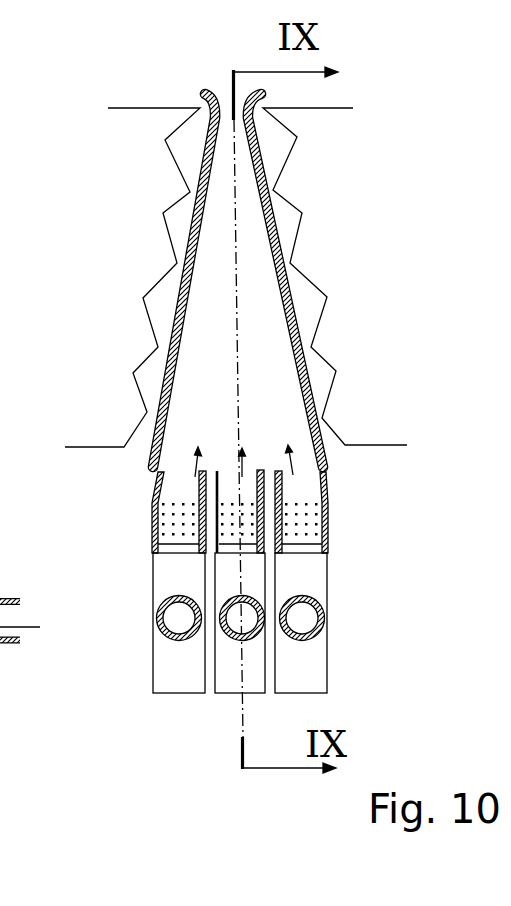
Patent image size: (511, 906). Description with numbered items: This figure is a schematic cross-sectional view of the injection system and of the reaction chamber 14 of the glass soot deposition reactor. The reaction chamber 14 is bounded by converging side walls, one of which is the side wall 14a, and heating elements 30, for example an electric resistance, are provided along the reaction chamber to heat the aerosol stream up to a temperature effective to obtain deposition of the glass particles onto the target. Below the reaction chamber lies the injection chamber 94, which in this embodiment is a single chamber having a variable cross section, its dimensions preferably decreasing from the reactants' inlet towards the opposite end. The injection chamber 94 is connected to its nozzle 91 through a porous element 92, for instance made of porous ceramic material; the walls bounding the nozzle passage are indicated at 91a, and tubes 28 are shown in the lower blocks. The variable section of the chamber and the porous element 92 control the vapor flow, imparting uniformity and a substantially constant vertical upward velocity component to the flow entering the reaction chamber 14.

The heating elements 30 is at (287, 171).
The reaction chamber 14 is at (217, 315).
The converging side wall 14a is at (293, 303).
The nozzle 91 is at (272, 473).
The separating wall 91a is at (190, 483).
The porous element 92 is at (237, 528).
The coolant tube 28 is at (230, 622).
The injection chamber 94 is at (230, 668).